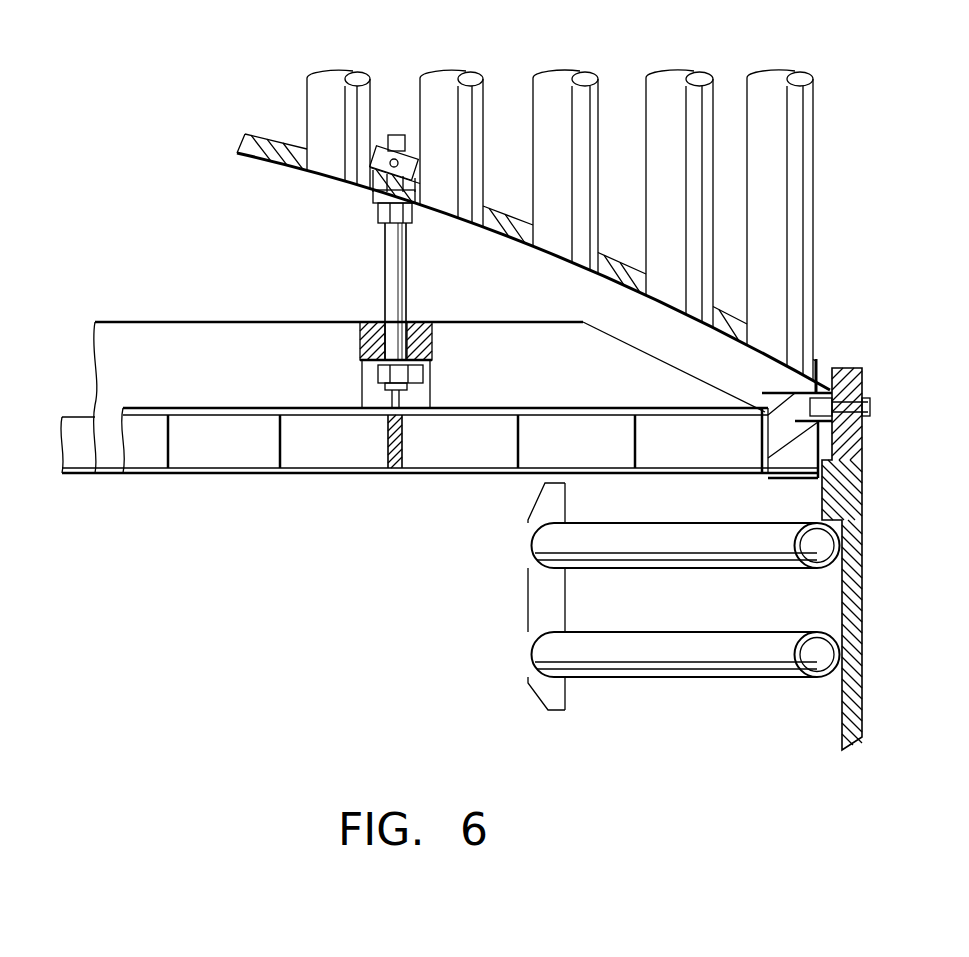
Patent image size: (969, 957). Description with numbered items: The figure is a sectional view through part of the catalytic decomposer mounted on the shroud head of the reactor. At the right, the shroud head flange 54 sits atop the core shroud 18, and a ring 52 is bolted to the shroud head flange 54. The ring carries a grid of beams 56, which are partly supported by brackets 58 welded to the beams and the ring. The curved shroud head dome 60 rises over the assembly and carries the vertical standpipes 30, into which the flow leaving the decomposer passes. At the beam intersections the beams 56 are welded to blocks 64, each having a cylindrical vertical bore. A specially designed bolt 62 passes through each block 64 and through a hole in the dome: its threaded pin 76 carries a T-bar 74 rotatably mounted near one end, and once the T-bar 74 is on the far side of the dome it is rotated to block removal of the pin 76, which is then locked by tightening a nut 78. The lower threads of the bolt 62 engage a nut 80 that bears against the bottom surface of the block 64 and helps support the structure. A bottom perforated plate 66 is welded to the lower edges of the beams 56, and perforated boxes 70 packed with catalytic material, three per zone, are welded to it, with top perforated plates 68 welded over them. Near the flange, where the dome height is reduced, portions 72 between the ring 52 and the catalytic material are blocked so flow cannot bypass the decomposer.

The core shroud 18 is at (843, 603).
The vertical standpipes 30 is at (762, 80).
The ring 52 is at (765, 398).
The shroud head flange 54 is at (838, 368).
The beams 56 is at (150, 332).
The brackets 58 is at (780, 422).
The shroud head dome 60 is at (259, 134).
The bolts 62 is at (366, 268).
The blocks 64 is at (425, 322).
The bottom perforated plate 66 is at (207, 475).
The top perforated plates 68 is at (240, 408).
The boxes 70 is at (322, 455).
The portions 72 is at (795, 455).
The T-bar 74 is at (385, 148).
The threaded pin 76 is at (408, 263).
The nut 78 is at (388, 212).
The nut 80 is at (400, 374).